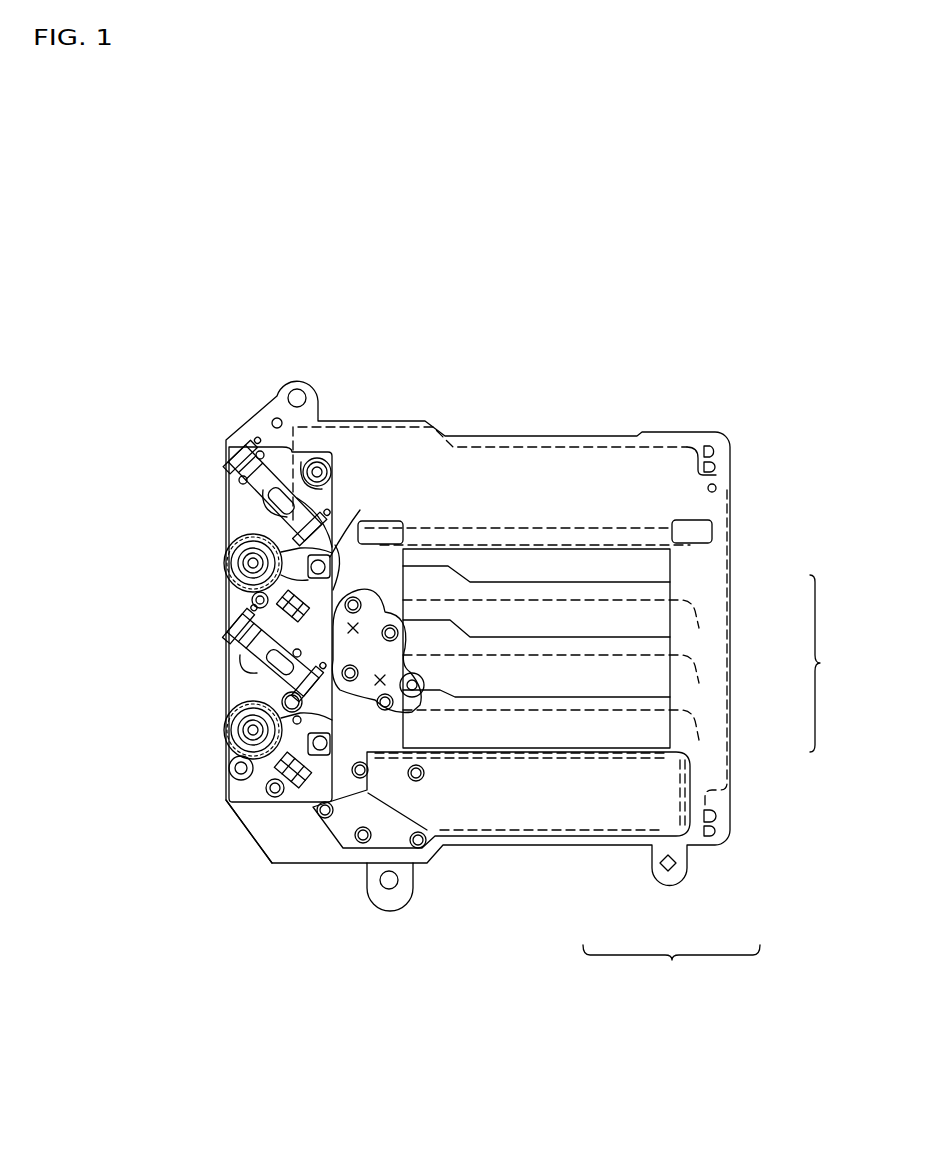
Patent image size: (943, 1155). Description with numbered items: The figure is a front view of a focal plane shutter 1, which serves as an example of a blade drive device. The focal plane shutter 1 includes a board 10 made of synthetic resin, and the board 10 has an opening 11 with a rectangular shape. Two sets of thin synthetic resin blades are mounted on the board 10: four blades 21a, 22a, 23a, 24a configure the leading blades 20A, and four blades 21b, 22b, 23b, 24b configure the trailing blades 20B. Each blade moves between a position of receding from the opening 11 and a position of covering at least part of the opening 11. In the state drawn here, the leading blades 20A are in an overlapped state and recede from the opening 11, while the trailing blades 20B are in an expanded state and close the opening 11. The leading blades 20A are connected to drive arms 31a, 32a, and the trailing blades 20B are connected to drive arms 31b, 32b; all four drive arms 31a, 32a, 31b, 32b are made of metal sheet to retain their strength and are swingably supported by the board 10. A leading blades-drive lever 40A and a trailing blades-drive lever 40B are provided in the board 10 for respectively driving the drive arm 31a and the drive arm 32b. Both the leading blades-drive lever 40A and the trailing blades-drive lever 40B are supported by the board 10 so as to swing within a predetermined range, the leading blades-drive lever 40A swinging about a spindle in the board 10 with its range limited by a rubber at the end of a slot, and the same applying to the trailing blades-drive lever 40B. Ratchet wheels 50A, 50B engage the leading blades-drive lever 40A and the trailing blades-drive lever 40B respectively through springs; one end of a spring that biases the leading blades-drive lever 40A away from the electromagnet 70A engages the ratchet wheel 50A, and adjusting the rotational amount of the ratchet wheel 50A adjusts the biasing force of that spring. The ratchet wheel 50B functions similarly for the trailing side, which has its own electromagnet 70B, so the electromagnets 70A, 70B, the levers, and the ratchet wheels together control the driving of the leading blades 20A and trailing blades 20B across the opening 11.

The focal plane shutter 1 is at (707, 366).
The board 10 is at (731, 838).
The opening 11 is at (625, 548).
The leading blades 20A is at (671, 966).
The trailing blades 20B is at (836, 663).
The blade 21a is at (597, 818).
The blade 22a is at (558, 885).
The blade 23a is at (694, 850).
The blade 24a is at (719, 850).
The blade 21b is at (725, 735).
The blade 22b is at (727, 673).
The blade 23b is at (733, 622).
The blade 24b is at (738, 587).
The drive arm 31a is at (349, 859).
The drive arm 31b is at (300, 927).
The drive arm 32a is at (335, 700).
The drive arm 32b is at (335, 700).
The leading blades-drive lever 40A is at (268, 787).
The trailing blades-drive lever 40B is at (240, 598).
The ratchet wheel 50A is at (228, 722).
The ratchet wheel 50B is at (228, 557).
The electromagnet 70A is at (230, 632).
The electromagnet 70B is at (245, 497).